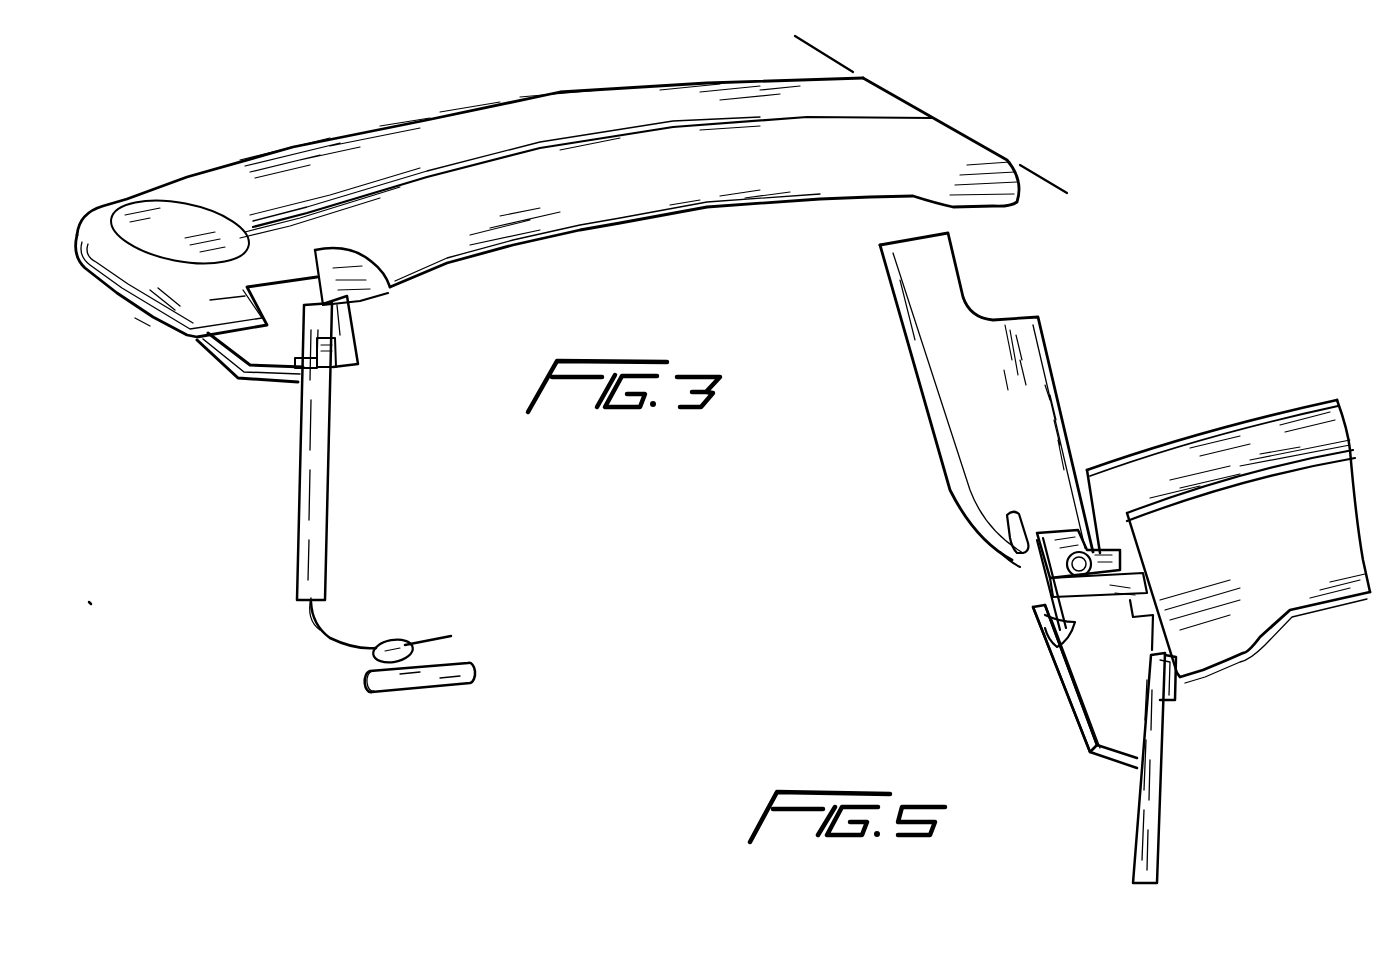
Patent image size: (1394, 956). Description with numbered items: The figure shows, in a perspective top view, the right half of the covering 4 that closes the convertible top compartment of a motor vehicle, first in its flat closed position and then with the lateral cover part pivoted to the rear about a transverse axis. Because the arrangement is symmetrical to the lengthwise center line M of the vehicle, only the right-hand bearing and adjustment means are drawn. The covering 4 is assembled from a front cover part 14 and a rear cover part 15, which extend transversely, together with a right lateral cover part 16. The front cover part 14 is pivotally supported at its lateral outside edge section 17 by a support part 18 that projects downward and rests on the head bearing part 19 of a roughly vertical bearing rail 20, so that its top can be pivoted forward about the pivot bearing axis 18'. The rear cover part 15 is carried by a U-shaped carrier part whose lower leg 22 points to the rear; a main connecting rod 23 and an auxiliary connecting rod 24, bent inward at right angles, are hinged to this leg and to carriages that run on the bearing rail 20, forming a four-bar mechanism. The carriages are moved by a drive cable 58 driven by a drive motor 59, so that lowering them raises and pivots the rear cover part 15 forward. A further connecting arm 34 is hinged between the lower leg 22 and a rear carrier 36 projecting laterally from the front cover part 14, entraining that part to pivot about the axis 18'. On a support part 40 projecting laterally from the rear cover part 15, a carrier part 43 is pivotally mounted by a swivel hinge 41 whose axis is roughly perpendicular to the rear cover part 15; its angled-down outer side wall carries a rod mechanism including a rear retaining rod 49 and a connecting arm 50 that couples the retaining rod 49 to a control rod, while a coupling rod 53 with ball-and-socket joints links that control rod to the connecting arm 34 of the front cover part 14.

In FIG. 3, the covering 4 is at (312, 117).
In FIG. 3, the front cover part 14 is at (603, 212).
In FIG. 5, the front cover part 14 is at (1323, 600).
In FIG. 3, the rear cover part 15 is at (573, 113).
In FIG. 5, the rear cover part 15 is at (1260, 427).
In FIG. 3, the right lateral cover part 16 is at (160, 290).
In FIG. 5, the right lateral cover part 16 is at (1045, 400).
In FIG. 3, the lateral outside edge section 17 is at (393, 288).
In FIG. 3, the support part 18 is at (380, 340).
In FIG. 5, the pivot bearing axis 18' is at (1224, 702).
In FIG. 3, the head bearing part 19 is at (344, 372).
In FIG. 3, the bearing rail 20 is at (325, 497).
In FIG. 5, the bearing rail 20 is at (1157, 793).
In FIG. 5, the lower leg 22 is at (1040, 663).
In FIG. 3, the main connecting rod 23 is at (210, 366).
In FIG. 5, the main connecting rod 23 is at (1073, 680).
In FIG. 3, the auxiliary connecting rod 24 is at (250, 385).
In FIG. 5, the auxiliary connecting rod 24 is at (1067, 713).
In FIG. 5, the connecting arm 34 is at (1040, 633).
In FIG. 5, the rear carrier 36 is at (1110, 587).
In FIG. 5, the support part 40 is at (1133, 547).
In FIG. 5, the swivel hinge 41 is at (1090, 547).
In FIG. 5, the carrier part 43 is at (1053, 527).
In FIG. 5, the rear retaining rod 49 is at (1030, 520).
In FIG. 5, the connecting arm 50 is at (1013, 533).
In FIG. 5, the coupling rod 53 is at (1037, 600).
In FIG. 3, the drive cable 58 is at (327, 621).
In FIG. 3, the drive motor 59 is at (458, 669).
In FIG. 3, the lengthwise center line M is at (813, 47).